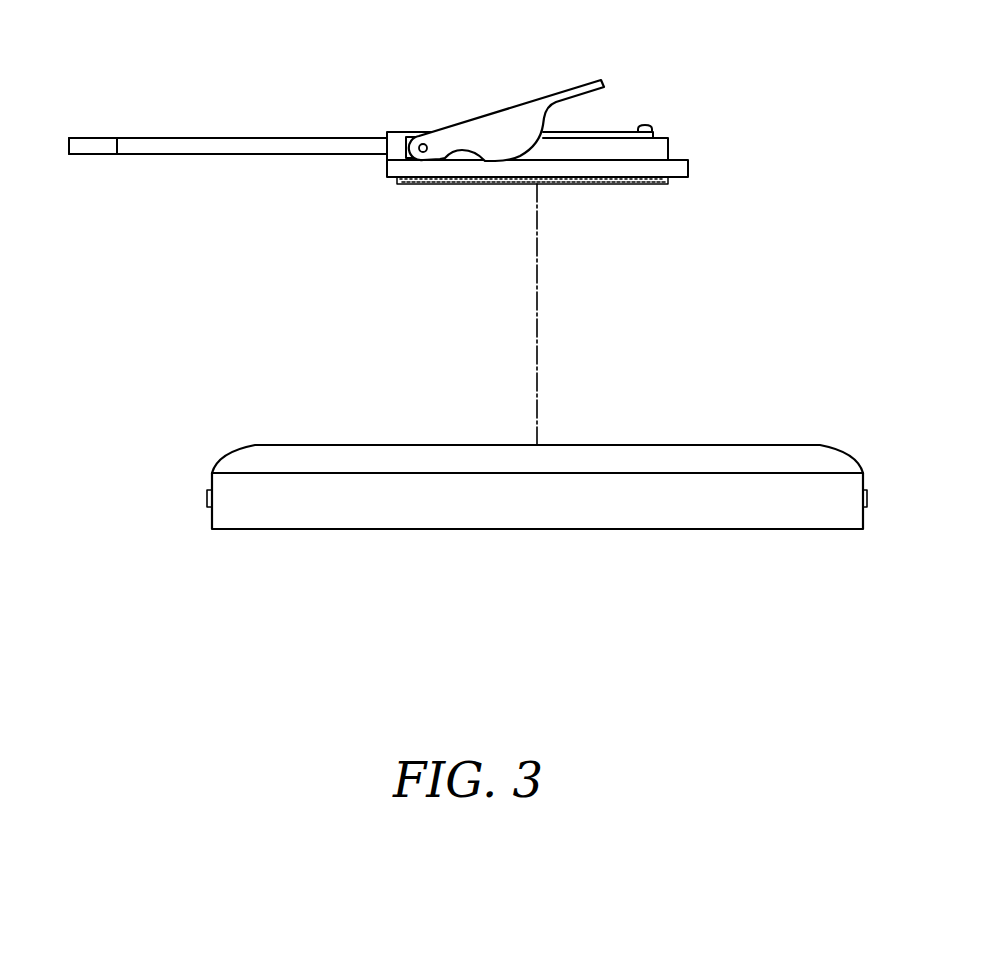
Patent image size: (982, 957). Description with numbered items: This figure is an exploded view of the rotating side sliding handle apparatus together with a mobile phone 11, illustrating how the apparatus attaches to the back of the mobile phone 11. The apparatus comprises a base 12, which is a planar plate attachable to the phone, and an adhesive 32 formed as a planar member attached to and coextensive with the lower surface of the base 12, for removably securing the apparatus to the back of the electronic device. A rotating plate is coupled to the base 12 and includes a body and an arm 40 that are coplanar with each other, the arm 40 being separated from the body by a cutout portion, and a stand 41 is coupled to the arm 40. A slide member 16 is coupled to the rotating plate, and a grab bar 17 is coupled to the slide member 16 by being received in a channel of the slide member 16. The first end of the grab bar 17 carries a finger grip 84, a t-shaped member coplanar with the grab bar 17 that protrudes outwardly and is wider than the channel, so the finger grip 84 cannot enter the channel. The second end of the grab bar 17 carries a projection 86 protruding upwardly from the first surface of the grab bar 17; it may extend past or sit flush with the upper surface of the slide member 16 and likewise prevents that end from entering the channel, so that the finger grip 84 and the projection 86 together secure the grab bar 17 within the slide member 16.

The mobile phone 11 is at (730, 498).
The base 12 is at (675, 168).
The slide member 16 is at (413, 132).
The grab bar 17 is at (248, 146).
The adhesive 32 is at (643, 183).
The arm 40 is at (658, 146).
The stand 41 is at (498, 123).
The finger grip 84 is at (90, 145).
The projection 86 is at (648, 125).